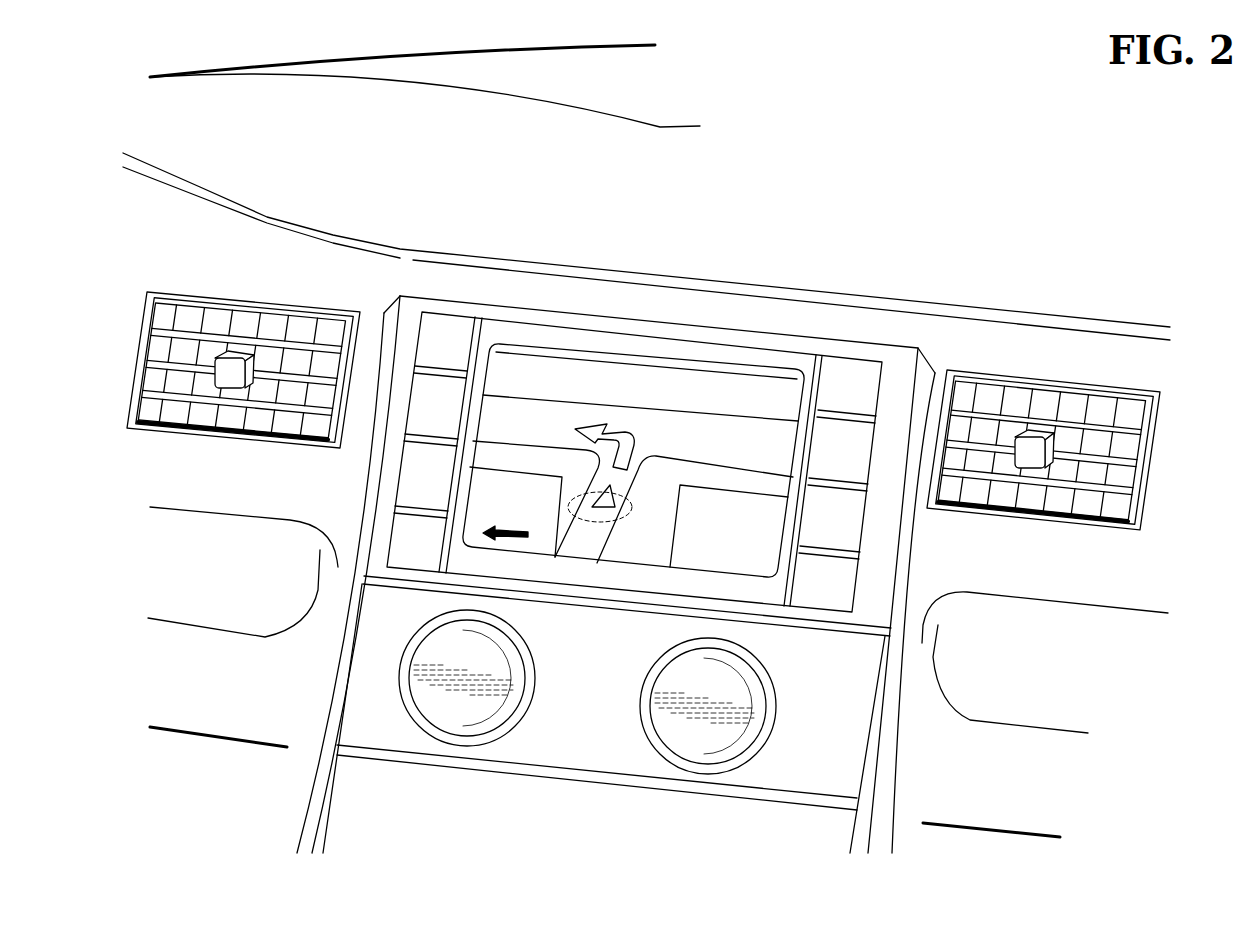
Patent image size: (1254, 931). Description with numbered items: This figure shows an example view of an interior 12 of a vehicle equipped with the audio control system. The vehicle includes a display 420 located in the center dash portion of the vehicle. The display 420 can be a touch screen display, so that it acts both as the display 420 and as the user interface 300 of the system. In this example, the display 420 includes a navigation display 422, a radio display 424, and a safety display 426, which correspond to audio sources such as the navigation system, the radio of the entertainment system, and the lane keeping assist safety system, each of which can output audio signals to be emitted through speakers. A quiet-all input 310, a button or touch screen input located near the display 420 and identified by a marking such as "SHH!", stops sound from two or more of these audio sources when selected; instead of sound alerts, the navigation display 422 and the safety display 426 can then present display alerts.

The interior 12 is at (939, 344).
The user interface 300 is at (634, 439).
The quiet-all input 310 is at (457, 324).
The display 420 is at (634, 439).
The navigation display 422 is at (688, 381).
The radio display 424 is at (752, 565).
The safety display 426 is at (537, 533).